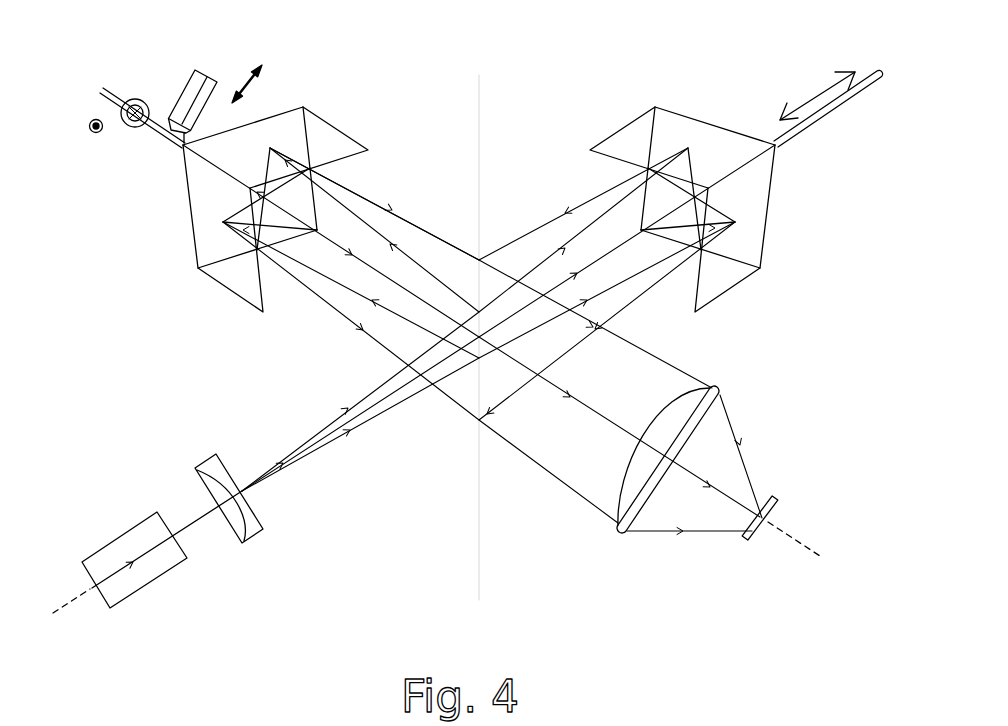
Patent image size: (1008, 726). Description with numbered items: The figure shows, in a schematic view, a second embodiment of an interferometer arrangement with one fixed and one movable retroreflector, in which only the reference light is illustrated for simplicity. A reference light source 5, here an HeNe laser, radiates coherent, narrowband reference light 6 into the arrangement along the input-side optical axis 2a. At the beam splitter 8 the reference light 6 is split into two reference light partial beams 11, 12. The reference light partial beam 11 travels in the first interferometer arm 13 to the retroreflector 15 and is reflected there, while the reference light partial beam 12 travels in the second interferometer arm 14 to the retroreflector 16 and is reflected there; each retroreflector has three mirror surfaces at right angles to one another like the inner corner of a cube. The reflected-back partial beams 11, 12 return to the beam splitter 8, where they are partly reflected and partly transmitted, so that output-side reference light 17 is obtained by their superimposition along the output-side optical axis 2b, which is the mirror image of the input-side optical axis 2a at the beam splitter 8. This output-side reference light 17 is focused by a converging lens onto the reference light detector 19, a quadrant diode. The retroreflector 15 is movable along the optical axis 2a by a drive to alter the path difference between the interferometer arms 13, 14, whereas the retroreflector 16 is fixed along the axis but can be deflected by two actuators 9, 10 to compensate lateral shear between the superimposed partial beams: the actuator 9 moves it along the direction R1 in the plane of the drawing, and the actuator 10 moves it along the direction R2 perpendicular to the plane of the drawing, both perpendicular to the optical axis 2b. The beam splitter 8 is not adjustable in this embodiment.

The input-side optical axis 2a is at (141, 552).
The output-side optical axis 2b is at (794, 539).
The reference light source 5 is at (158, 568).
The reference light 6 is at (190, 522).
The beam splitter 8 is at (478, 105).
The actuator 9 is at (215, 85).
The actuator 10 is at (142, 100).
The reference light partial beam 11 is at (600, 226).
The reference light partial beam 12 is at (379, 216).
The first interferometer arm 13 is at (662, 320).
The second interferometer arm 14 is at (286, 316).
The retroreflector 15 is at (688, 130).
The retroreflector 16 is at (313, 135).
The output-side reference light 17 is at (580, 500).
The reference light detector 19 is at (753, 560).
The direction R1 is at (257, 84).
The direction R2 is at (98, 140).